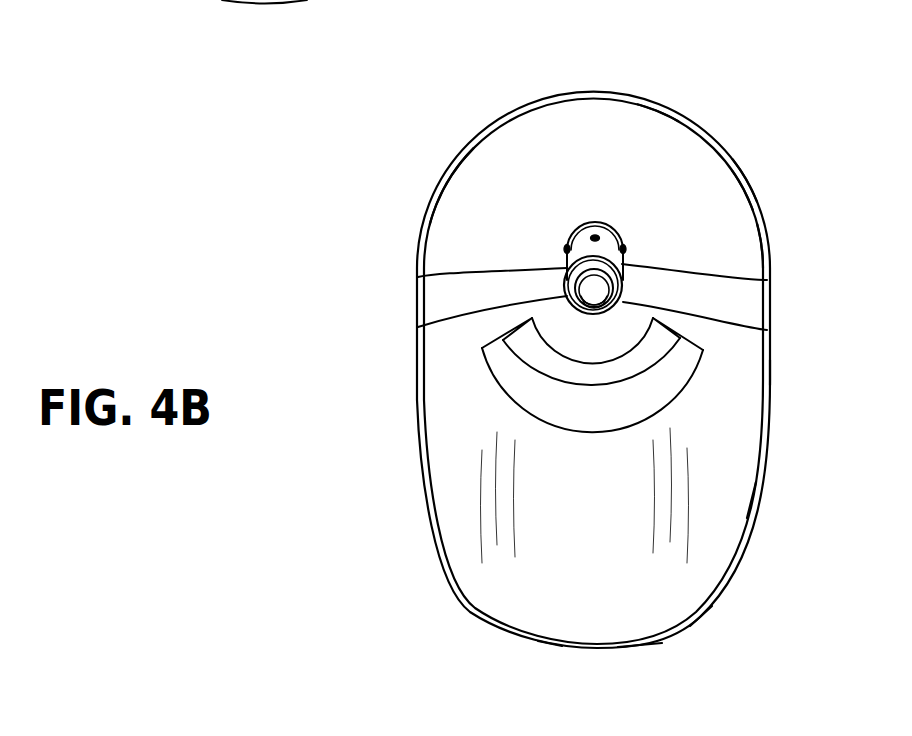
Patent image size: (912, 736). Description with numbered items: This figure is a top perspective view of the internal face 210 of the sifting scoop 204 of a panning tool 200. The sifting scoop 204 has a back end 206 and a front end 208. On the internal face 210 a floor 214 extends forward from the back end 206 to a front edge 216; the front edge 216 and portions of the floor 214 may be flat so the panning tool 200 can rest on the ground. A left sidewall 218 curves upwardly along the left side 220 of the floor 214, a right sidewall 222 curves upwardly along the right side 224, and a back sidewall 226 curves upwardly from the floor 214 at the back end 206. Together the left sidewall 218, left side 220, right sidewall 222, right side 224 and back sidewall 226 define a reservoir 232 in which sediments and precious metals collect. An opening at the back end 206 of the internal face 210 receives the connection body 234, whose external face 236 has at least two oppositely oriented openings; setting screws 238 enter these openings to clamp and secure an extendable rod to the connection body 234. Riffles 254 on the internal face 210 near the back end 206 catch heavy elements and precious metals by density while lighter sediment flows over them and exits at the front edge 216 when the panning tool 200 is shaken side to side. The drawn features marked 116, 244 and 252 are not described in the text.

The adjacent assembly portion 116 is at (193, 0).
The panning tool 200 is at (397, 595).
The sifting scoop 204 is at (767, 398).
The back end 206 is at (750, 178).
The front end 208 is at (700, 617).
The internal face 210 is at (728, 488).
The floor 214 is at (540, 627).
The front edge 216 is at (647, 643).
The left sidewall 218 is at (467, 208).
The left side 220 is at (508, 213).
The right sidewall 222 is at (737, 247).
The right side 224 is at (692, 243).
The back sidewall 226 is at (633, 147).
The reservoir 232 is at (397, 240).
The connection body 234 is at (418, 277).
The external face 236 is at (767, 280).
The setting screws 238 is at (623, 247).
The lower ridge 244 is at (418, 327).
The lower ridge right portion 252 is at (767, 330).
The riffles 254 is at (510, 385).